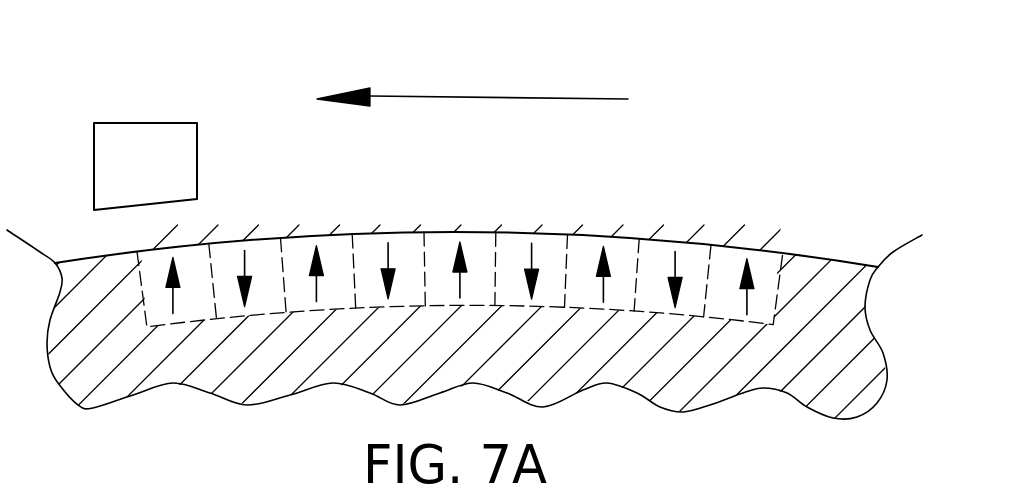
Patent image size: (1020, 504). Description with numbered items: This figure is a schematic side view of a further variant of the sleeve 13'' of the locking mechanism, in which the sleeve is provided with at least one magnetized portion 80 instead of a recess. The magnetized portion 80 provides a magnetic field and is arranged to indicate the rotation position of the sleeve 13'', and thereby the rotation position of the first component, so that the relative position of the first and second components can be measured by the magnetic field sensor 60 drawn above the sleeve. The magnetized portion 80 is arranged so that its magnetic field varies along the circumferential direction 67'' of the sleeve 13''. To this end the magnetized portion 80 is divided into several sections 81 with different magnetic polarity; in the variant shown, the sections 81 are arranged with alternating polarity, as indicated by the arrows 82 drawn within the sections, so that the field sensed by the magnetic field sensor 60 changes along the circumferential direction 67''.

The sleeve 13'' is at (510, 294).
The magnetic field sensor 60 is at (150, 123).
The circumferential direction 67'' is at (472, 59).
The magnetized portion 80 is at (713, 140).
The sections 81 is at (403, 250).
The arrows 82 is at (249, 260).